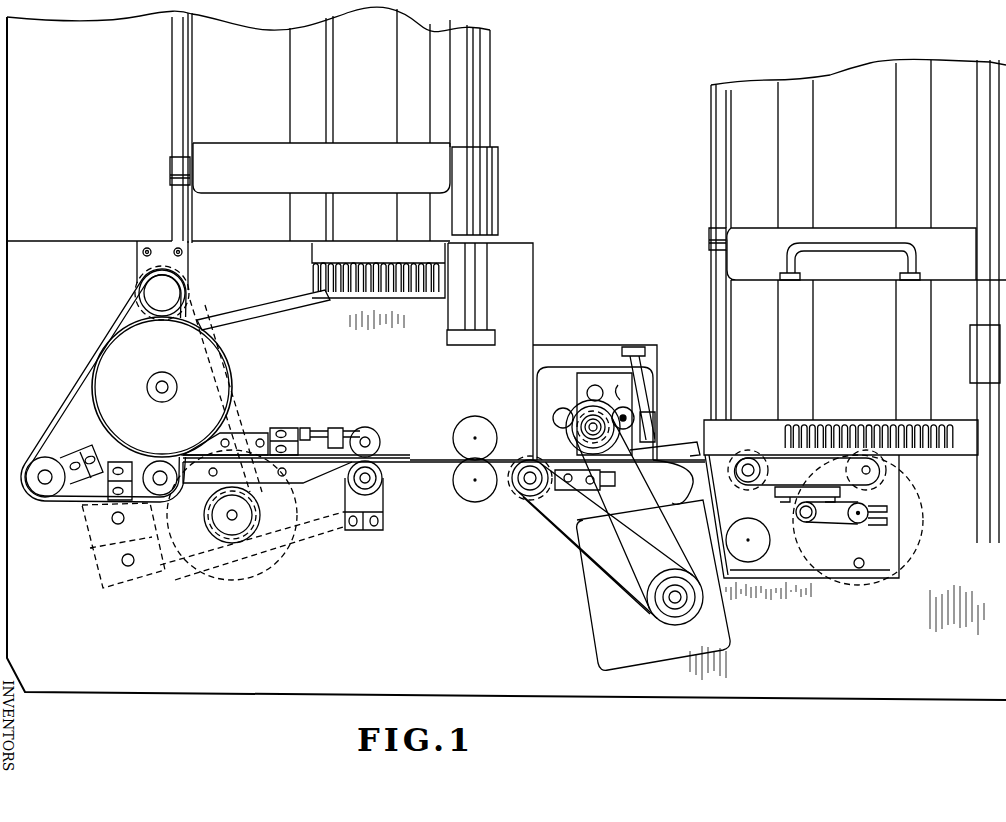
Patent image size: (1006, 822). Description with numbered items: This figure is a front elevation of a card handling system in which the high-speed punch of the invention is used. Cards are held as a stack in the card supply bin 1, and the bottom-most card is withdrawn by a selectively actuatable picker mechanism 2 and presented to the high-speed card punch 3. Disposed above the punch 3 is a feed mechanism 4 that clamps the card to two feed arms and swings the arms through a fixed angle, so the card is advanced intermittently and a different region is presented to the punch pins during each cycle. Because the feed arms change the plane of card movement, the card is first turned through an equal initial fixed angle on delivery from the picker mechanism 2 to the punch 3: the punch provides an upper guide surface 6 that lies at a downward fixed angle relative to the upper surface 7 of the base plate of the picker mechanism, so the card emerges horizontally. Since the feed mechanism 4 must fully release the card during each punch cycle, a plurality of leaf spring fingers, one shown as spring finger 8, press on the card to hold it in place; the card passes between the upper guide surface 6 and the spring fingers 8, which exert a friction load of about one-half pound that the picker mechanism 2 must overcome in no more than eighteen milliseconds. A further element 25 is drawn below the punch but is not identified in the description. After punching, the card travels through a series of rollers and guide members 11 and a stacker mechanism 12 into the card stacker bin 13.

The card supply bin 1 is at (748, 323).
The picker mechanism 2 is at (883, 540).
The high-speed card punch 3 is at (574, 558).
The feed mechanism 4 is at (658, 383).
The upper guide surface 6 is at (604, 471).
The upper surface of the base plate 7 is at (724, 446).
The leaf spring finger 8 is at (673, 492).
The rollers and guide members 11 is at (398, 442).
The stacker mechanism 12 is at (60, 397).
The card stacker bin 13 is at (302, 308).
The pulley 25 is at (677, 622).